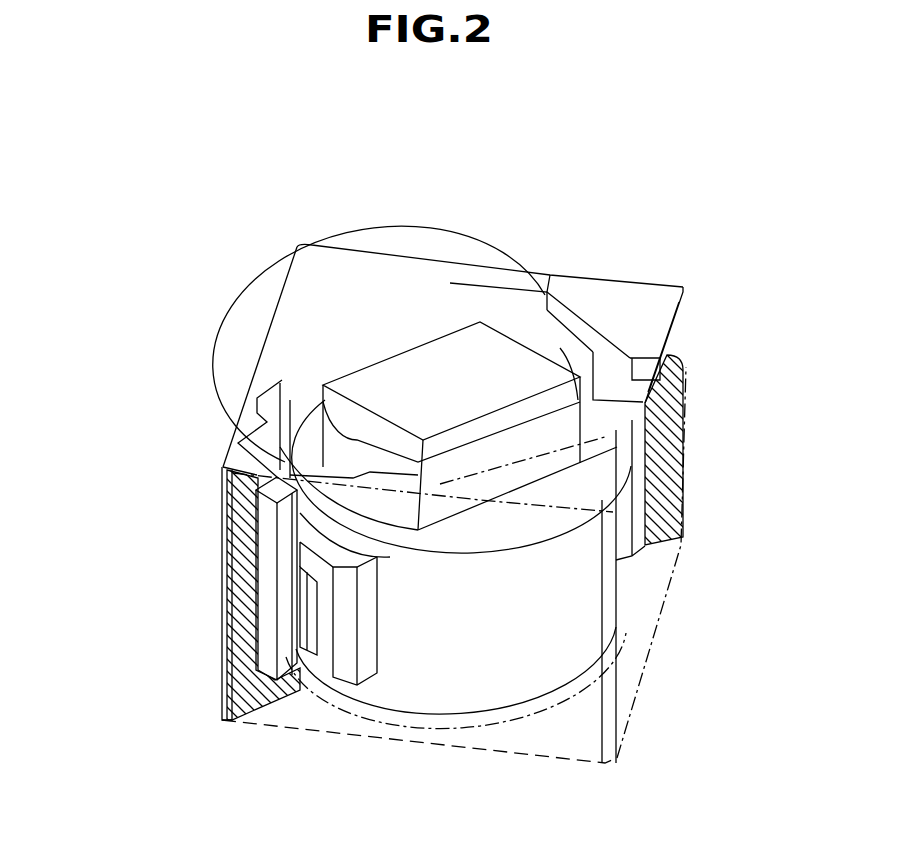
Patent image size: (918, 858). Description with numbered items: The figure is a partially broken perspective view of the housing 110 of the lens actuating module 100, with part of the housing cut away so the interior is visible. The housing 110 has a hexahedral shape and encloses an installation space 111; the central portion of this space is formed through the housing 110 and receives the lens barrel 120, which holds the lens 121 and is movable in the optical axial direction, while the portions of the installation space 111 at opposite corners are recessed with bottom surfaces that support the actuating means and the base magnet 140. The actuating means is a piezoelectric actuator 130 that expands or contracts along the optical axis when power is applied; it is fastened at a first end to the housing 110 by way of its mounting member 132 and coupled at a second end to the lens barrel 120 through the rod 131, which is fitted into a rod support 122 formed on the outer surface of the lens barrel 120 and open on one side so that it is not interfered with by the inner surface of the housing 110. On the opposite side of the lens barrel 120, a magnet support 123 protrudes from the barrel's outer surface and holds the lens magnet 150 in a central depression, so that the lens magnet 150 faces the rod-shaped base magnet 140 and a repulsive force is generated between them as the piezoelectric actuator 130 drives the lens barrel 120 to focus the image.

The lens actuating module 100 is at (200, 210).
The housing 110 is at (358, 268).
The installation space 111 is at (463, 297).
The lens barrel 120 is at (312, 422).
The lens 121 is at (373, 380).
The rod support 122 is at (640, 414).
The magnet support 123 is at (373, 670).
The piezoelectric actuator 130 is at (610, 375).
The rod 131 is at (640, 483).
The mounting member 132 is at (647, 293).
The base magnet 140 is at (288, 668).
The lens magnet 150 is at (303, 662).